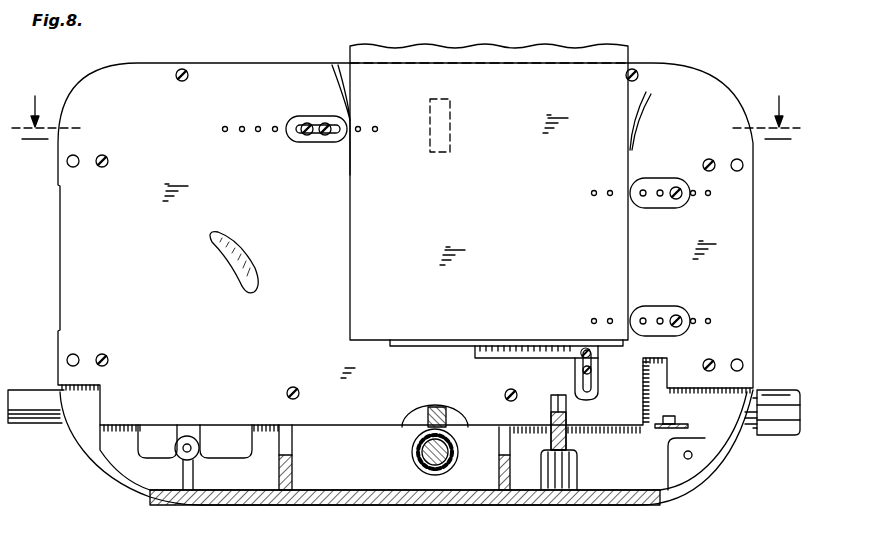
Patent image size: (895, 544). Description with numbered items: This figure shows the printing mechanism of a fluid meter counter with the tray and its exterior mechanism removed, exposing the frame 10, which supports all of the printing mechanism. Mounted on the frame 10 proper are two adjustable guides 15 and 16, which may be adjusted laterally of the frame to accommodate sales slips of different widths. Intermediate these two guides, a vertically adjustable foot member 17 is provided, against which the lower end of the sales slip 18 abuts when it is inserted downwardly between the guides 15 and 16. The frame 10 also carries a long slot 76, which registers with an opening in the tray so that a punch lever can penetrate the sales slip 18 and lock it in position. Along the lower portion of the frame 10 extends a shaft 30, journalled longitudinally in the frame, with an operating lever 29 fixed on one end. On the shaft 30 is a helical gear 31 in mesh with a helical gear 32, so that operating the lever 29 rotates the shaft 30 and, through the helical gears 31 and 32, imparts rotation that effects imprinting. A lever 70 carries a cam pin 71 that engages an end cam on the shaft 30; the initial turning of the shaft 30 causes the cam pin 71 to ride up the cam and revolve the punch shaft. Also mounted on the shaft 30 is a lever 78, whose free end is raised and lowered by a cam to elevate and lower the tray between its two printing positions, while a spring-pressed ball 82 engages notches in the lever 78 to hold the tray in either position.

The frame 10 is at (58, 251).
The adjustable guide 15 is at (340, 82).
The adjustable guide 16 is at (640, 112).
The foot member 17 is at (435, 352).
The sales slip 18 is at (350, 272).
The operating lever 29 is at (780, 392).
The shaft 30 is at (448, 452).
The helical gear 31 is at (428, 422).
The helical gear 32 is at (414, 462).
The lever 70 is at (662, 430).
The cam pin 71 is at (670, 416).
The long slot 76 is at (452, 115).
The lever 78 is at (567, 437).
The spring-pressed ball 82 is at (578, 448).